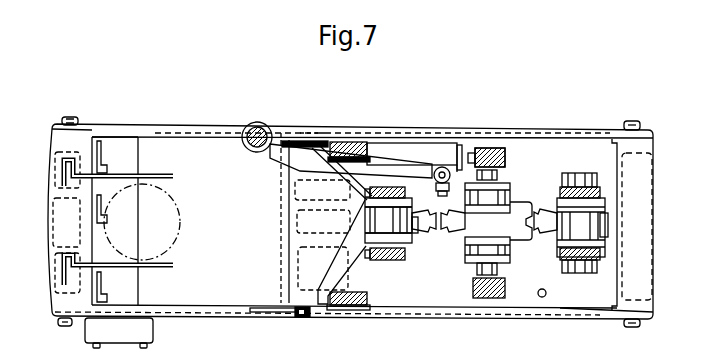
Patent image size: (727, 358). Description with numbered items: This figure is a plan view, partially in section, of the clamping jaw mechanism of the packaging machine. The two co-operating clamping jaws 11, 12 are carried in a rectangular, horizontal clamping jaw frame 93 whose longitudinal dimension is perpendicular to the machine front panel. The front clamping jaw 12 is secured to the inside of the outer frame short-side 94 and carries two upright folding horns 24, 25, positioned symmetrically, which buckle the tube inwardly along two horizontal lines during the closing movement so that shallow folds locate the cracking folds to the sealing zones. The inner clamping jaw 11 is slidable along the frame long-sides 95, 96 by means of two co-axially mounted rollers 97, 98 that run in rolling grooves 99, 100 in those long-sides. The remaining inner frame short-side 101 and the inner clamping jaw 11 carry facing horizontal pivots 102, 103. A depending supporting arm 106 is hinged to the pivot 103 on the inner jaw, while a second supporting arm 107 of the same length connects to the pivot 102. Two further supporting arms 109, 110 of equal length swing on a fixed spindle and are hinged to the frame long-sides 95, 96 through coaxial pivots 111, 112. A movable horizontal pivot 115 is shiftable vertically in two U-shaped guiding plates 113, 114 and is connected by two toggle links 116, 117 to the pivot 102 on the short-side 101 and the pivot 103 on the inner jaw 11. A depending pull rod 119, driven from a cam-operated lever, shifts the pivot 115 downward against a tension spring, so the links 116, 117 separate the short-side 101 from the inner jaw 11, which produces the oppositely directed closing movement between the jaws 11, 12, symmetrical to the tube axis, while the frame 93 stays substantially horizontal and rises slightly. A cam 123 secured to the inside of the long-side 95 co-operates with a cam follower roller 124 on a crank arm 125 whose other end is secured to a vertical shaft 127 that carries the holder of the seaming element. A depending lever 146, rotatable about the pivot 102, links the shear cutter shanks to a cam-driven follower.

The inner clamping jaw 11 is at (289, 270).
The front clamping jaw 12 is at (127, 291).
The folding horn 24 is at (173, 176).
The folding horn 25 is at (173, 266).
The clamping jaw frame 93 is at (412, 120).
The outer frame short-side 94 is at (72, 143).
The frame long-side 95 is at (108, 137).
The frame long-side 96 is at (456, 313).
The roller 97 is at (313, 134).
The roller 98 is at (302, 317).
The rolling groove 99 is at (282, 134).
The rolling groove 100 is at (277, 313).
The inner frame short-side 101 is at (637, 163).
The pivot 102 is at (563, 280).
The pivot 103 is at (384, 260).
The supporting arm 106 is at (363, 201).
The second supporting arm 107 is at (560, 193).
The supporting arm 109 is at (363, 142).
The supporting arm 110 is at (368, 312).
The pivot 111 is at (347, 142).
The pivot 112 is at (340, 316).
The guiding plate 113 is at (497, 148).
The guiding plate 114 is at (498, 272).
The movable pivot 115 is at (498, 176).
The toggle link 116 is at (553, 227).
The toggle link 117 is at (421, 227).
The pull rod 119 is at (487, 150).
The cam 123 is at (410, 152).
The cam follower roller 124 is at (460, 160).
The crank arm 125 is at (353, 170).
The vertical shaft 127 is at (248, 127).
The lever 146 is at (570, 173).